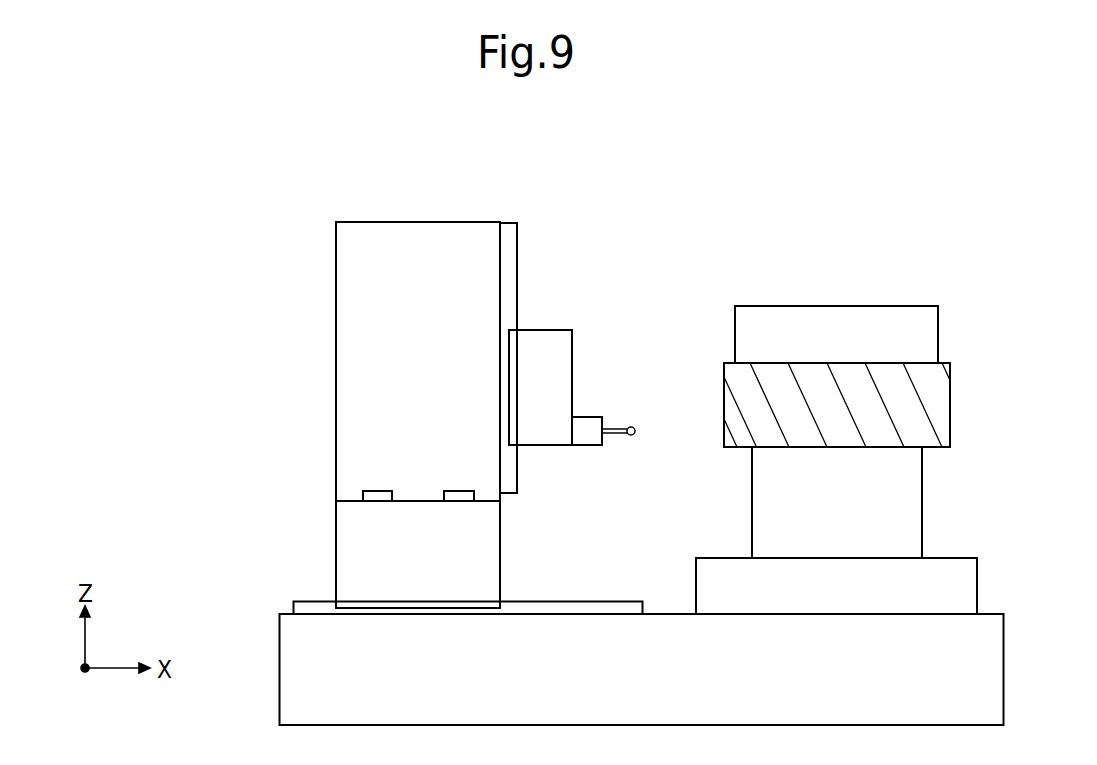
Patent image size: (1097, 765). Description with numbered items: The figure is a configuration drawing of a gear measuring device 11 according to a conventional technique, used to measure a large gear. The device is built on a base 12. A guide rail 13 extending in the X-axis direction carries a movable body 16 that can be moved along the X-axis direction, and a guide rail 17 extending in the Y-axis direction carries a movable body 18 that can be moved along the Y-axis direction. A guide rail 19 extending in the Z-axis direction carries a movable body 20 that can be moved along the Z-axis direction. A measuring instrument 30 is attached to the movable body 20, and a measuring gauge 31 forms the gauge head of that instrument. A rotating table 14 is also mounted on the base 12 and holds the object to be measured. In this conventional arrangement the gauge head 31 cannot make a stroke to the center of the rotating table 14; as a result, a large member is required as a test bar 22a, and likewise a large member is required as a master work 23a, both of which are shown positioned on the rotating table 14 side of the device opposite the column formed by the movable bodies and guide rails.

The gear measuring device 11 is at (620, 260).
The base 12 is at (990, 675).
The guide rail 13 is at (563, 605).
The rotating table 14 is at (715, 567).
The movable body 16 is at (358, 555).
The guide rail 17 is at (453, 493).
The movable body 18 is at (355, 317).
The guide rail 19 is at (509, 238).
The movable body 20 is at (543, 330).
The test bar 22a is at (747, 330).
The master work 23a is at (732, 397).
The measuring instrument 30 is at (585, 440).
The measuring gauge 31 is at (615, 434).